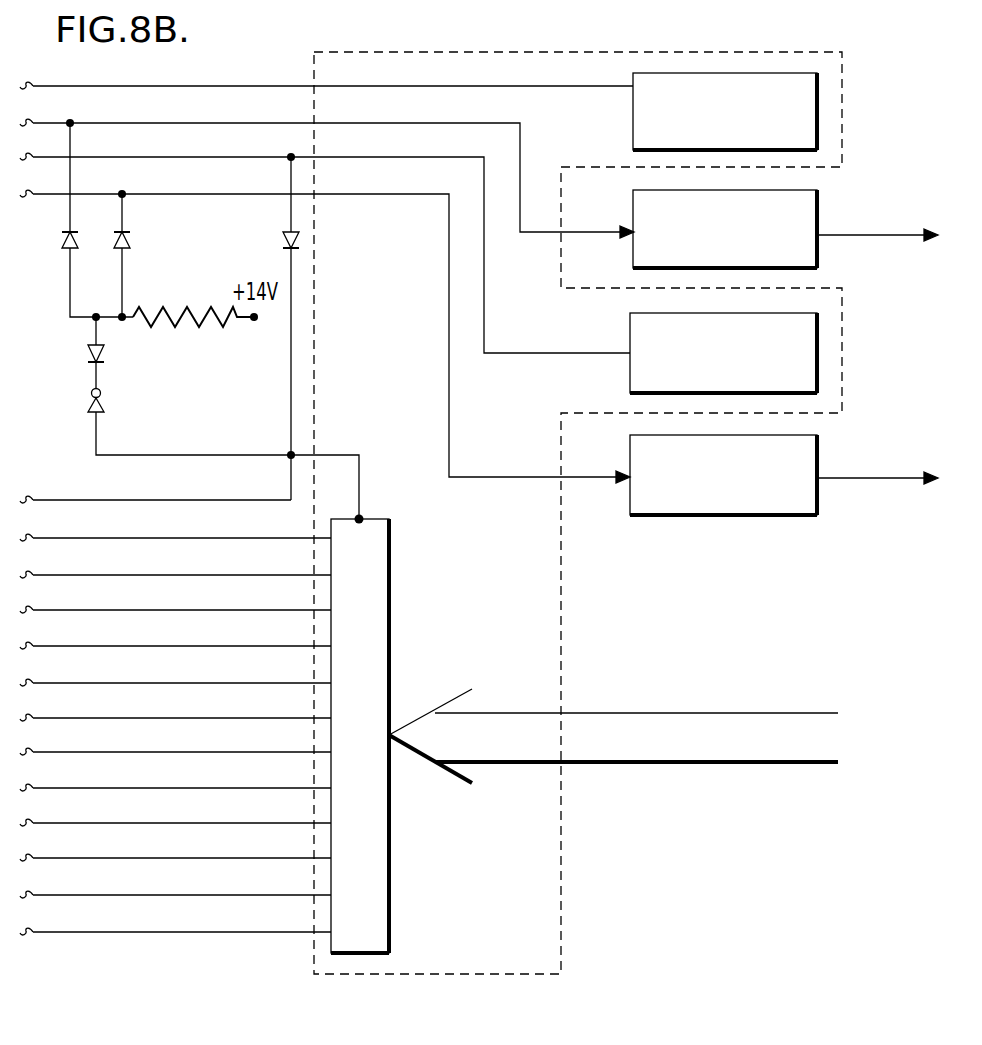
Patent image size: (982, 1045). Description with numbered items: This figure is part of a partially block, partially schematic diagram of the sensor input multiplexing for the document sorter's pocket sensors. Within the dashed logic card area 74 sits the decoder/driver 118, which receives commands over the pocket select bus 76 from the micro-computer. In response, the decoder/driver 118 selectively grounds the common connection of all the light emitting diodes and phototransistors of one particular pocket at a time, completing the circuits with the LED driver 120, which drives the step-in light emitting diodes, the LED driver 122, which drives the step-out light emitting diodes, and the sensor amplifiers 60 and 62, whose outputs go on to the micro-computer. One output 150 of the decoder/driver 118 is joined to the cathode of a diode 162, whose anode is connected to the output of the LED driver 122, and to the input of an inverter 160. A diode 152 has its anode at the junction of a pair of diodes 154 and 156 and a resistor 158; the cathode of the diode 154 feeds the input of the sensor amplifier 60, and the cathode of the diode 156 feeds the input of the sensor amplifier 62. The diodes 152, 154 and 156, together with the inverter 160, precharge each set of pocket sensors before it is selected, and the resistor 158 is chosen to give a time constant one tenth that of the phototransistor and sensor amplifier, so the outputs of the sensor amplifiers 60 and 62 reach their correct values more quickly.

The sensor amplifier 60 is at (789, 247).
The sensor amplifier 62 is at (793, 485).
The sensor select decoder/driver 74 is at (561, 974).
The pocket select bus 76 is at (627, 713).
The decoder/driver 118 is at (390, 559).
The LED driver 120 is at (782, 126).
The LED driver 122 is at (781, 373).
The output 150 is at (359, 518).
The diode 152 is at (88, 352).
The diode 154 is at (62, 242).
The diode 156 is at (146, 228).
The resistor 158 is at (172, 319).
The inverter 160 is at (88, 400).
The diode 162 is at (282, 243).